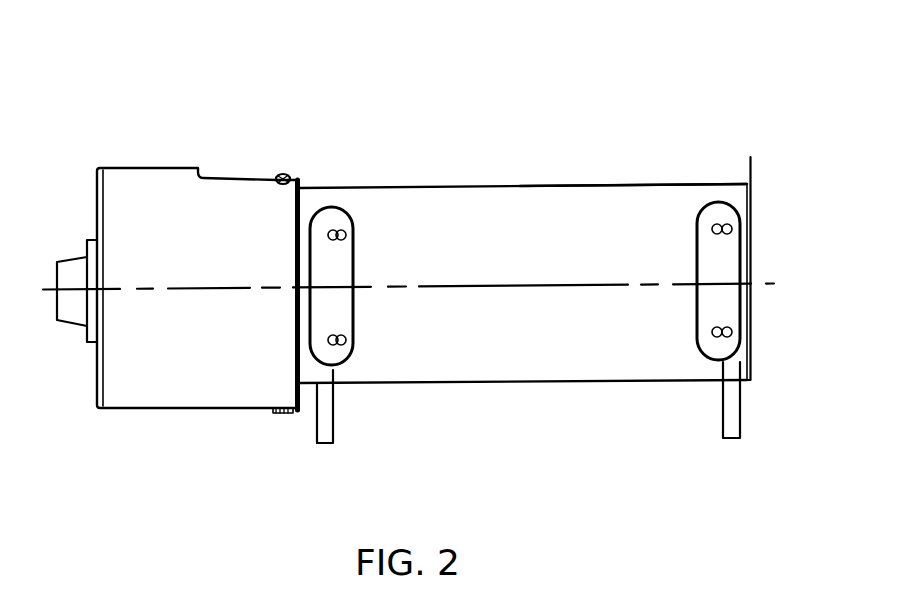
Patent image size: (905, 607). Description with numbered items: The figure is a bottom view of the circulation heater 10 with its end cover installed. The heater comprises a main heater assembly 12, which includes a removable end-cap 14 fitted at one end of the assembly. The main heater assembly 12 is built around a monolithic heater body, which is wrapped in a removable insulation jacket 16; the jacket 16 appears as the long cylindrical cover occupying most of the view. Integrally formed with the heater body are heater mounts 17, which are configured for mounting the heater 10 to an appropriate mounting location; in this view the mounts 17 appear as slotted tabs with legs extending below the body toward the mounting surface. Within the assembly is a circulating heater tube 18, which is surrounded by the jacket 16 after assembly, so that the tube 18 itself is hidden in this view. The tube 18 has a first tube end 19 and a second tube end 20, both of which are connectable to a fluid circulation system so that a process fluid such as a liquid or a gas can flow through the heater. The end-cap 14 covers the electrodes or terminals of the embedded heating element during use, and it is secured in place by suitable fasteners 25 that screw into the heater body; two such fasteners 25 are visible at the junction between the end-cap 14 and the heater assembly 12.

The circulation heater 10 is at (625, 98).
The main heater assembly 12 is at (410, 187).
The removable end-cap 14 is at (145, 176).
The insulation jacket 16 is at (643, 197).
The heater mounts 17 is at (342, 302).
The circulating heater tube 18 is at (323, 416).
The first tube end 19 is at (327, 433).
The second tube end 20 is at (733, 423).
The fasteners 25 is at (283, 172).